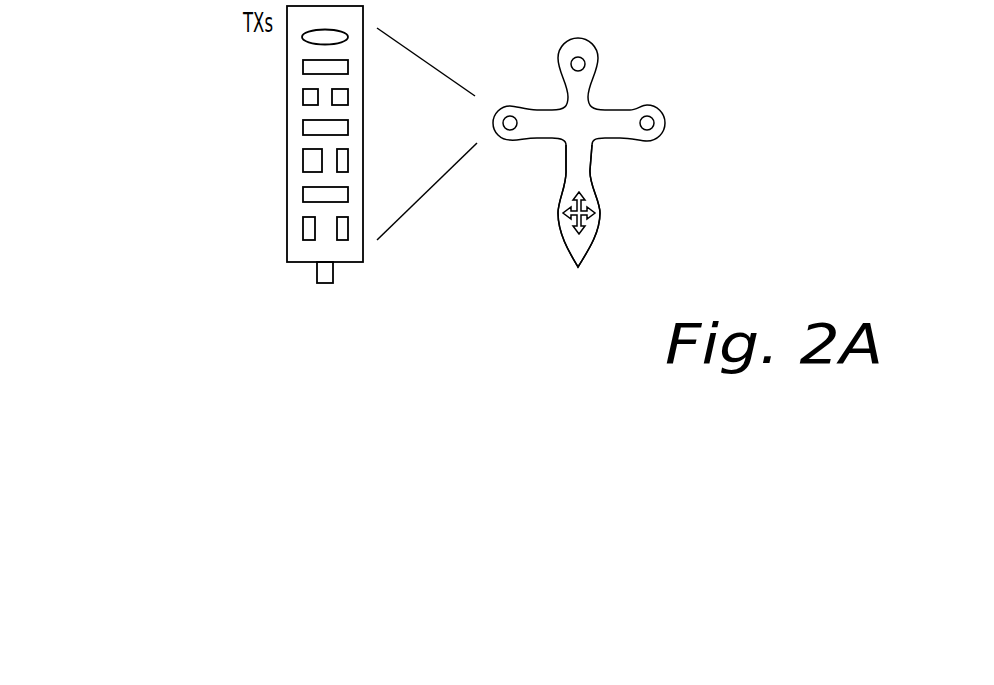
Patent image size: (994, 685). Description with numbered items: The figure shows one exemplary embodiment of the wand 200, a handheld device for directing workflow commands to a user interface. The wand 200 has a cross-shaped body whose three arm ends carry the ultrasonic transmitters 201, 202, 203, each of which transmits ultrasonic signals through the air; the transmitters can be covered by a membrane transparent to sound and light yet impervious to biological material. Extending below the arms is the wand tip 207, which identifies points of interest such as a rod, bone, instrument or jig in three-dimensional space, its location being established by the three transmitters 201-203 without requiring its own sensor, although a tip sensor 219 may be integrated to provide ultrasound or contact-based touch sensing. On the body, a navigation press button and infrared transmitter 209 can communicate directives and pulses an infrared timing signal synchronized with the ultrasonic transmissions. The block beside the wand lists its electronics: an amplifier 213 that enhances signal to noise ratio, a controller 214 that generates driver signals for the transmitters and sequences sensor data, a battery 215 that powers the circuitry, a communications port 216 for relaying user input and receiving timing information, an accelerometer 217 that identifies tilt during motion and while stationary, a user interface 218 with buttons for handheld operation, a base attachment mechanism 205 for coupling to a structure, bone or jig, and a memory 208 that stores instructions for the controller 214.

The wand 200 is at (783, 442).
The ultrasonic transmitter 201 is at (584, 60).
The ultrasonic transmitter 202 is at (652, 128).
The ultrasonic transmitter 203 is at (508, 117).
The base attachment mechanism 205 is at (190, 250).
The wand tip 207 is at (593, 152).
The memory 208 is at (251, 230).
The infrared transmitter 209 is at (563, 212).
The amplifier 213 is at (271, 47).
The controller 214 is at (232, 75).
The battery 215 is at (234, 102).
The communications port 216 is at (206, 116).
The accelerometer 217 is at (214, 144).
The user interface 218 is at (195, 172).
The tip sensor 219 is at (231, 185).